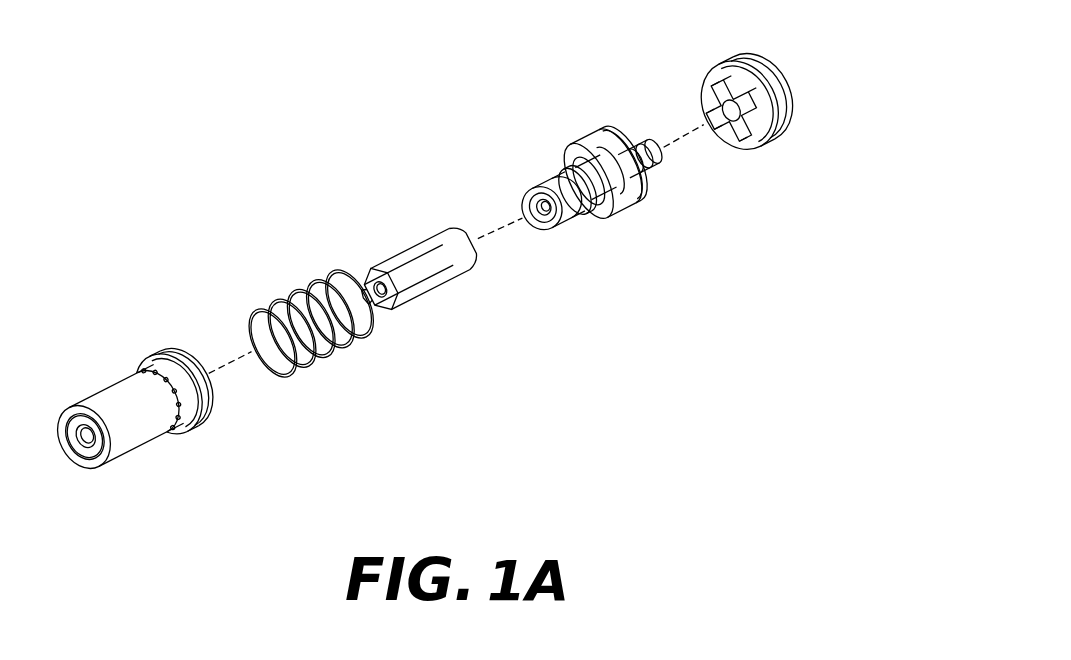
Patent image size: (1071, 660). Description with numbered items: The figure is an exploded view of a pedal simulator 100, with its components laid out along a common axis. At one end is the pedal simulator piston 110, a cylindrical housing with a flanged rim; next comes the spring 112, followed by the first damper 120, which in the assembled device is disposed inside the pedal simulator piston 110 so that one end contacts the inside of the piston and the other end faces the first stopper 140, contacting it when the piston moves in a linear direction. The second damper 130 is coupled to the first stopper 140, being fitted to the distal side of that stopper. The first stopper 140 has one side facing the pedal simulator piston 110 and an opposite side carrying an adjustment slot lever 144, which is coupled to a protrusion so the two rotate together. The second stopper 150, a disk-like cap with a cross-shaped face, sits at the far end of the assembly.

The pedal simulator 100 is at (158, 52).
The pedal simulator piston 110 is at (105, 393).
The spring 112 is at (307, 283).
The first damper 120 is at (417, 250).
The second damper 130 is at (545, 170).
The first stopper 140 is at (587, 152).
The adjustment slot lever 144 is at (643, 138).
The second stopper 150 is at (732, 62).